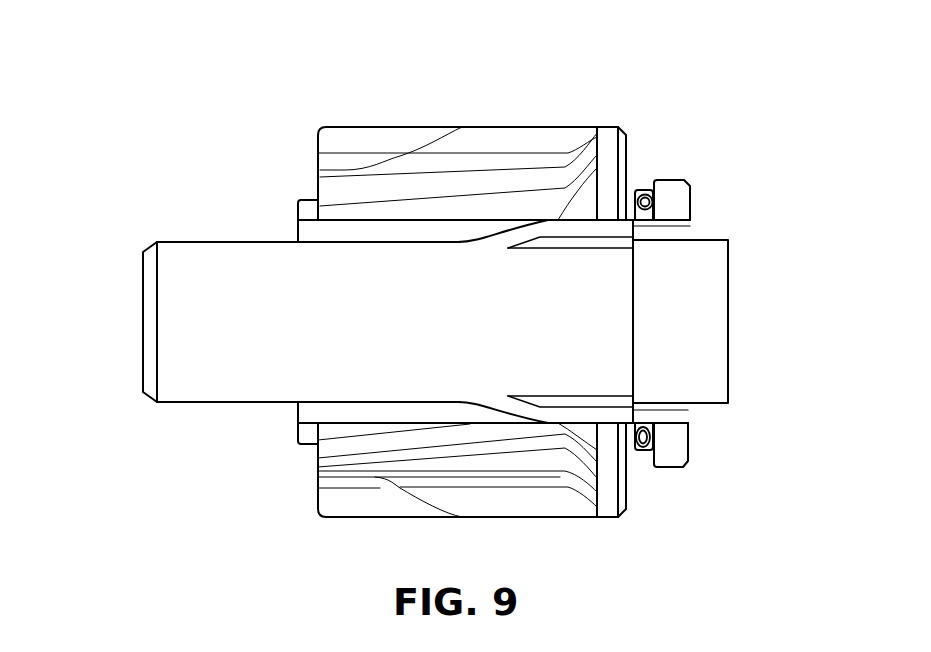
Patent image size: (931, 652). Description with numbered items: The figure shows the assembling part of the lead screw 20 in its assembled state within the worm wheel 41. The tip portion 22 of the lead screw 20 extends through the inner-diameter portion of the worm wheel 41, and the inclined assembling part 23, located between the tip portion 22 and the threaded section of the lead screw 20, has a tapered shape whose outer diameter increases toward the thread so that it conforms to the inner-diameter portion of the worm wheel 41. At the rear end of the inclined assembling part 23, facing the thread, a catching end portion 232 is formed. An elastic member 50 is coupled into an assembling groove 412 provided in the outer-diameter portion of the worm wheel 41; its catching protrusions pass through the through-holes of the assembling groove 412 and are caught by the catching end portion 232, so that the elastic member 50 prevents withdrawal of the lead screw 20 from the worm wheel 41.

The lead screw 20 is at (730, 236).
The tip portion 22 is at (143, 322).
The inclined assembling part 23 is at (513, 228).
The catching end portion 232 is at (648, 237).
The worm wheel 41 is at (383, 112).
The assembling groove 412 is at (636, 190).
The elastic member 50 is at (660, 180).